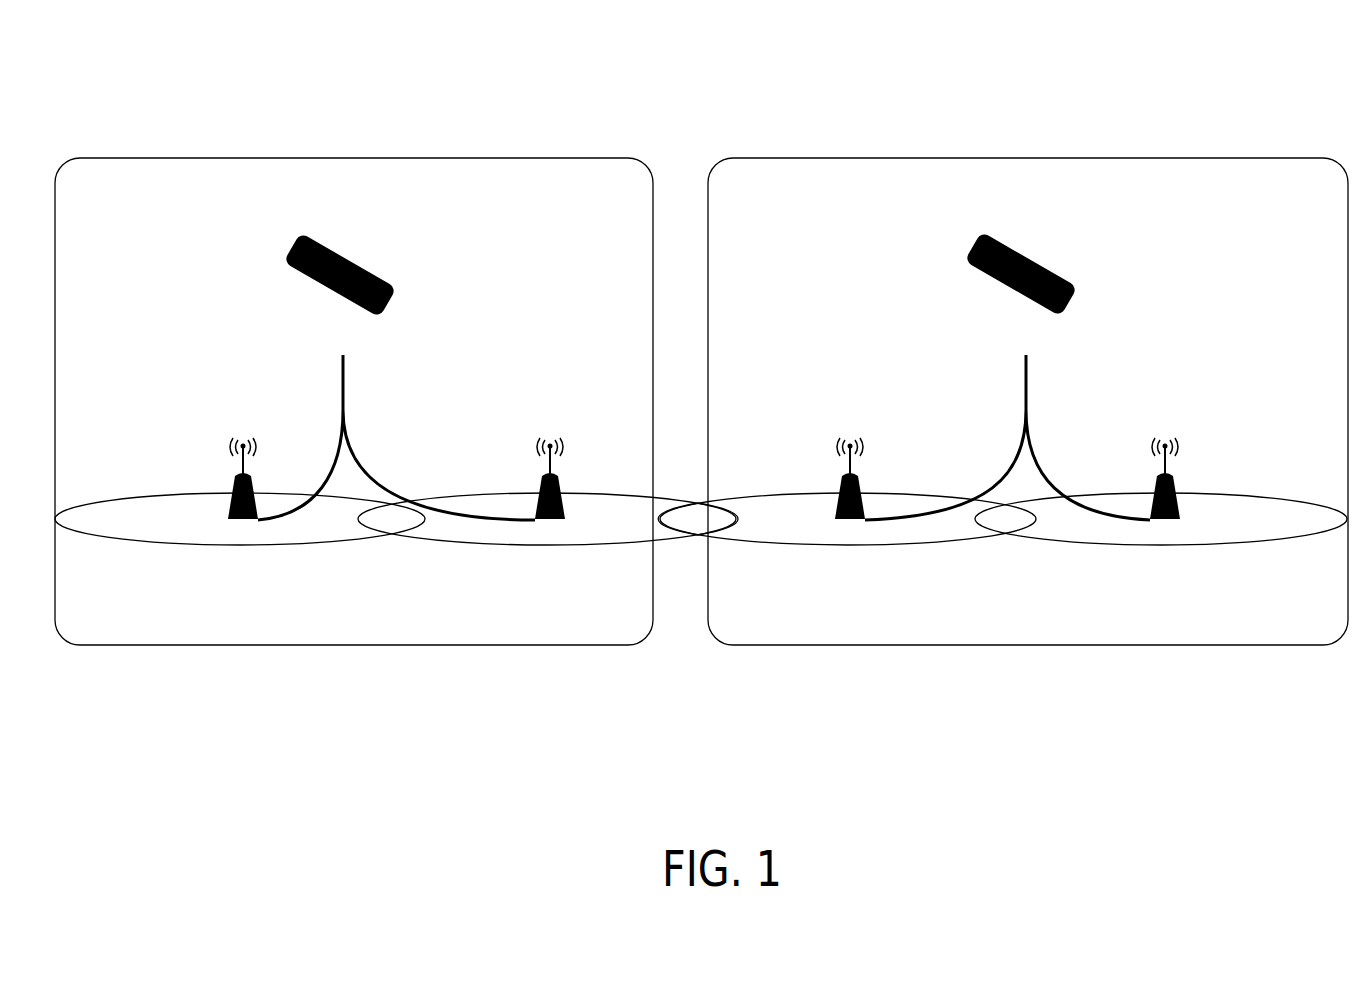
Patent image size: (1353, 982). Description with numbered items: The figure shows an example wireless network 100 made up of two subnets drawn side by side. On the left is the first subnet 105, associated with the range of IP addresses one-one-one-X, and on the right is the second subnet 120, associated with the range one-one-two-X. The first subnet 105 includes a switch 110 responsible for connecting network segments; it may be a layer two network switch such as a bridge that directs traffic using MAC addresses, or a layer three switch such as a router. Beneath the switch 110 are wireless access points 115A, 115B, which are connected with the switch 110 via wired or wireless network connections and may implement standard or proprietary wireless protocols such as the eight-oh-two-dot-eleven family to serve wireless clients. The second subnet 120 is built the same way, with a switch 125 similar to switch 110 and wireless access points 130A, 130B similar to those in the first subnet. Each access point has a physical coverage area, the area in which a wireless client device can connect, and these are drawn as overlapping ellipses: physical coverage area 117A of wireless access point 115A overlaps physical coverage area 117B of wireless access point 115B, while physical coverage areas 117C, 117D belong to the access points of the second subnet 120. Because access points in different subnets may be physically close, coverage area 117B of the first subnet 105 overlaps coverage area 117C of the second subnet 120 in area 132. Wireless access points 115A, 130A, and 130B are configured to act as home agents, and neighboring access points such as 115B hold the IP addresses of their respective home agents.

The wireless network 100 is at (701, 370).
The subnet 1 105 is at (395, 401).
The switch 110 is at (339, 291).
The wireless access point 115A is at (245, 491).
The wireless access point 115B is at (550, 491).
The physical coverage area 117A is at (197, 544).
The physical coverage area 117B is at (480, 548).
The physical coverage area 117C is at (958, 545).
The physical coverage area 117D is at (1228, 545).
The subnet 2 120 is at (1004, 401).
The switch 125 is at (1020, 291).
The wireless access point 130A is at (847, 491).
The wireless access point 130B is at (1169, 491).
The area 132 is at (688, 536).